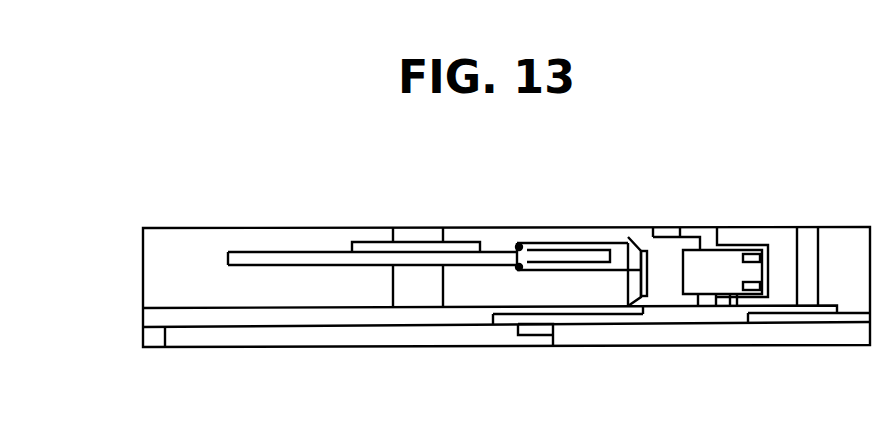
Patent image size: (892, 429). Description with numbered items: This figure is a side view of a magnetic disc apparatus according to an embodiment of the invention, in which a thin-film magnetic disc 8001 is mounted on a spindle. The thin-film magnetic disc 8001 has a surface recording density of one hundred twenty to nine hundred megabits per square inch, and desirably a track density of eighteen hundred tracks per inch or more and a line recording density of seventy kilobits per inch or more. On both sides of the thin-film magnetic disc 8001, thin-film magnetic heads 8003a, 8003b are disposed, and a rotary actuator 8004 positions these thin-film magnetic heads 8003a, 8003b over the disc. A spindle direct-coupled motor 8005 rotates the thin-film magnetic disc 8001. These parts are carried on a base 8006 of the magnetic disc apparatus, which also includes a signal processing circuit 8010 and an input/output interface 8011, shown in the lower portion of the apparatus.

The thin-film magnetic disc 8001 is at (272, 258).
The thin-film magnetic head 8003a is at (521, 244).
The thin-film magnetic head 8003b is at (518, 271).
The rotary actuator 8004 is at (708, 266).
The spindle direct-coupled motor 8005 is at (420, 293).
The base 8006 is at (155, 317).
The signal processing circuit 8010 is at (278, 336).
The input/output interface 8011 is at (717, 325).